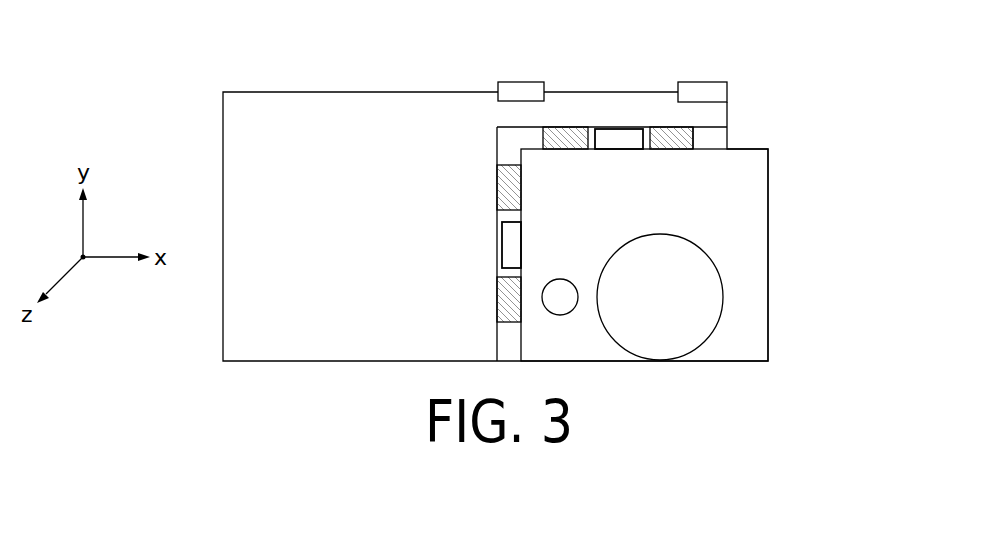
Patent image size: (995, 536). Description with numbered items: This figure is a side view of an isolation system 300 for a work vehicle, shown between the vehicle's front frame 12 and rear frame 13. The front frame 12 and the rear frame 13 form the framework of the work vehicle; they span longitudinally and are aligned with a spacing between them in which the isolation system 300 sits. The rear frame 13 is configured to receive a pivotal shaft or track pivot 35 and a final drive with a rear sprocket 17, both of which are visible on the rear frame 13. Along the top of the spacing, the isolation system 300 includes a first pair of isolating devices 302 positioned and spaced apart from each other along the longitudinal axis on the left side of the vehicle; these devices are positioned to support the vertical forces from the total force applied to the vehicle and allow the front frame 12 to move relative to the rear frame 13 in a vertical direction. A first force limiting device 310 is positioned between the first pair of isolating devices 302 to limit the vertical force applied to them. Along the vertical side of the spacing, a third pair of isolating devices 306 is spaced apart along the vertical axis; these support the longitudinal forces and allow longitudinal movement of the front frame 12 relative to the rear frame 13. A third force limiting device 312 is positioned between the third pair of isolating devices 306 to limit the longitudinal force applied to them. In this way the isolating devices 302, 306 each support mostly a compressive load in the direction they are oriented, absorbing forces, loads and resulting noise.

The isolation system 300 is at (766, 90).
The front frame 12 is at (240, 184).
The rear frame 13 is at (753, 343).
The rear sprocket 17 is at (657, 342).
The track pivot 35 is at (560, 280).
The first pair of isolating devices 302 is at (566, 138).
The first force limiting device 310 is at (617, 138).
The third pair of isolating devices 306 is at (508, 188).
The third force limiting device 312 is at (510, 246).